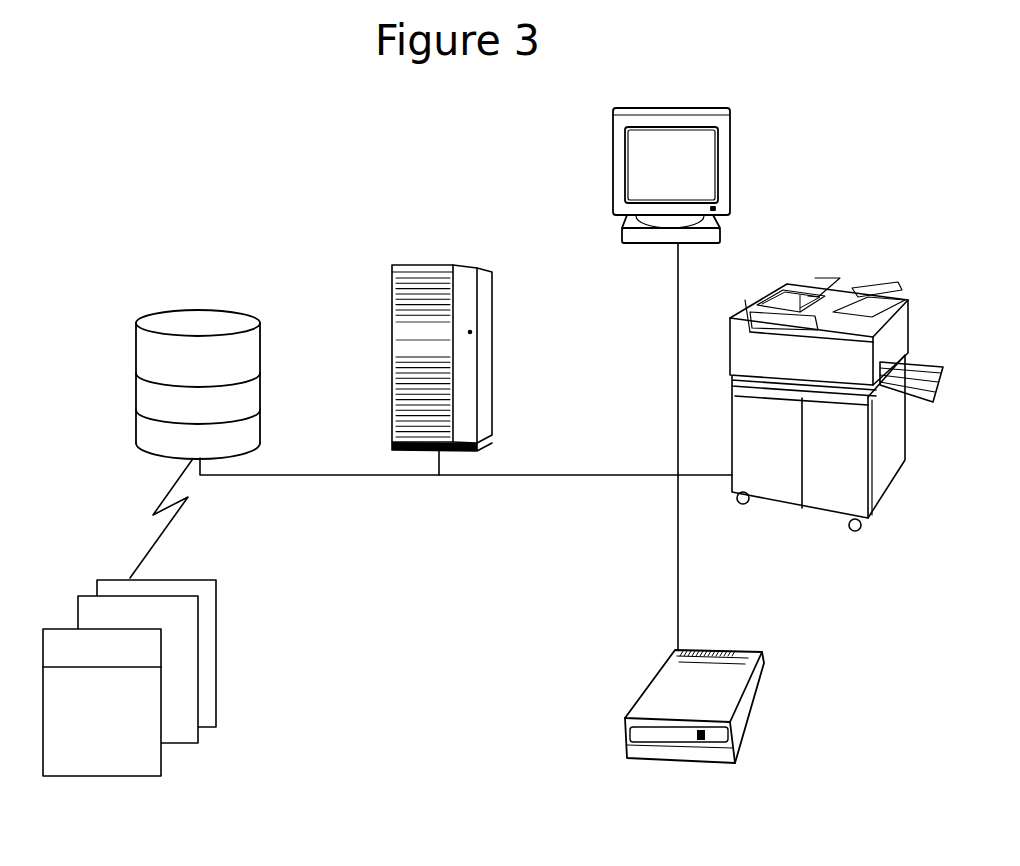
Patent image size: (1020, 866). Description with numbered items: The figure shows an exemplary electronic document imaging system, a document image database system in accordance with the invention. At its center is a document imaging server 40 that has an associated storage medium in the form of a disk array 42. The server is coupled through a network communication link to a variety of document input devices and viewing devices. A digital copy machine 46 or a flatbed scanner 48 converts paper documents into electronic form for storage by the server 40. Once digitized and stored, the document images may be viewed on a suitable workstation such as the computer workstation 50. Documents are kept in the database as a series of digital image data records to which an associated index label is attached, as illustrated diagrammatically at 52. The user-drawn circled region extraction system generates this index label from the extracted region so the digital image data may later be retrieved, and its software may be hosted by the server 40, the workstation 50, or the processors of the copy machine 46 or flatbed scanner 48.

The document imaging server 40 is at (490, 302).
The disk array 42 is at (138, 318).
The digital copy machine 46 is at (832, 517).
The flatbed scanner 48 is at (762, 687).
The computer workstation 50 is at (728, 205).
The digital image data records with index label 52 is at (217, 620).